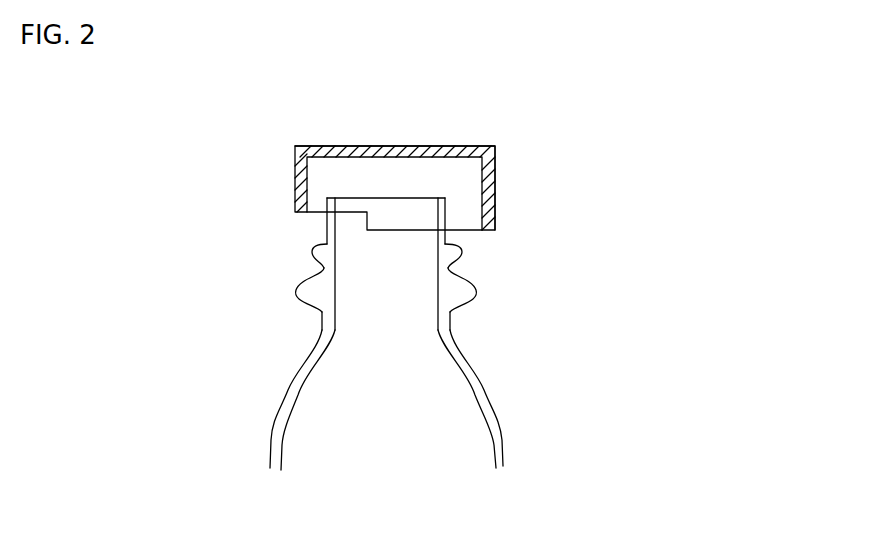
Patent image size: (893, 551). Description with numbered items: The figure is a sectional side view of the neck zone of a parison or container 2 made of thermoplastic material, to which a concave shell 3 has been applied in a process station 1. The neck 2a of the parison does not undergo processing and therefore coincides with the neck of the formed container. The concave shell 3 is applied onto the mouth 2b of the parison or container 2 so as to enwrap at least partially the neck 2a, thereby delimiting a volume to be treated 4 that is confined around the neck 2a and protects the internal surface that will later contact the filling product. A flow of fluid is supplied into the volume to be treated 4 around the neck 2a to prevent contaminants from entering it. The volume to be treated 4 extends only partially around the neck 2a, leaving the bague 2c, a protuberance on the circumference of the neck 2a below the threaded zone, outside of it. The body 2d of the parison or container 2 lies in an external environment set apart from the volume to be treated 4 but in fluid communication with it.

The process station 1 is at (712, 110).
The parison or container 2 is at (280, 328).
The neck 2a is at (299, 252).
The mouth 2b is at (385, 195).
The bague 2c is at (478, 296).
The body 2d is at (494, 394).
The concave shell 3 is at (499, 160).
The volume to be treated 4 is at (338, 171).